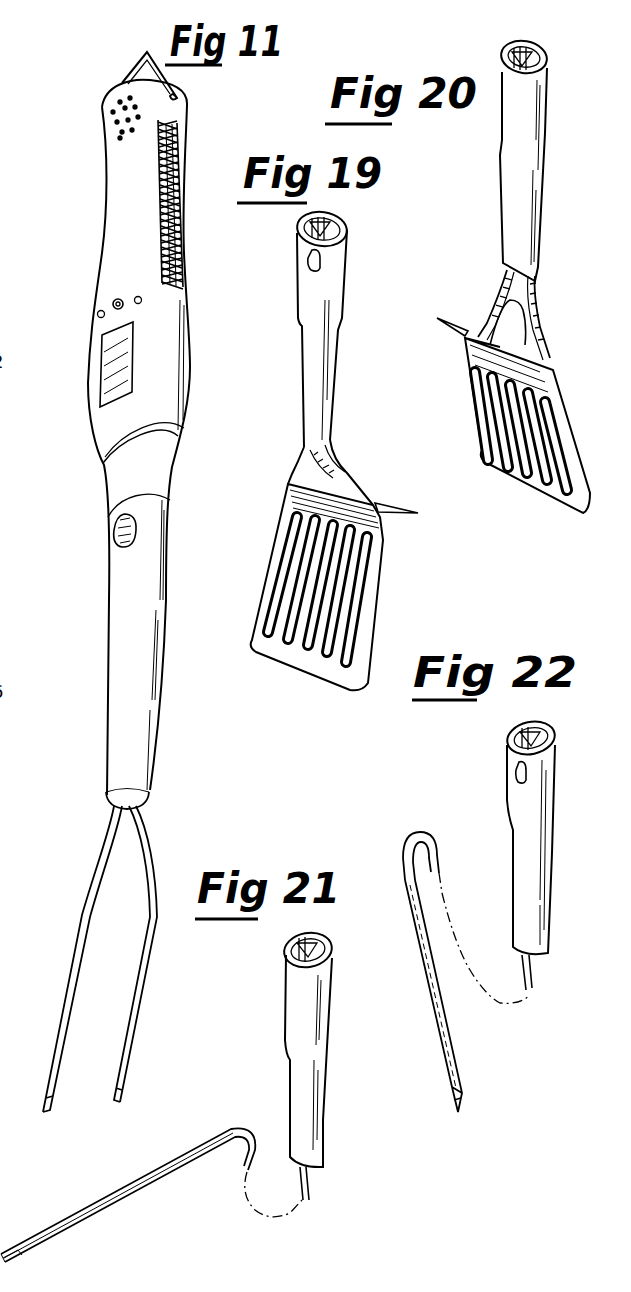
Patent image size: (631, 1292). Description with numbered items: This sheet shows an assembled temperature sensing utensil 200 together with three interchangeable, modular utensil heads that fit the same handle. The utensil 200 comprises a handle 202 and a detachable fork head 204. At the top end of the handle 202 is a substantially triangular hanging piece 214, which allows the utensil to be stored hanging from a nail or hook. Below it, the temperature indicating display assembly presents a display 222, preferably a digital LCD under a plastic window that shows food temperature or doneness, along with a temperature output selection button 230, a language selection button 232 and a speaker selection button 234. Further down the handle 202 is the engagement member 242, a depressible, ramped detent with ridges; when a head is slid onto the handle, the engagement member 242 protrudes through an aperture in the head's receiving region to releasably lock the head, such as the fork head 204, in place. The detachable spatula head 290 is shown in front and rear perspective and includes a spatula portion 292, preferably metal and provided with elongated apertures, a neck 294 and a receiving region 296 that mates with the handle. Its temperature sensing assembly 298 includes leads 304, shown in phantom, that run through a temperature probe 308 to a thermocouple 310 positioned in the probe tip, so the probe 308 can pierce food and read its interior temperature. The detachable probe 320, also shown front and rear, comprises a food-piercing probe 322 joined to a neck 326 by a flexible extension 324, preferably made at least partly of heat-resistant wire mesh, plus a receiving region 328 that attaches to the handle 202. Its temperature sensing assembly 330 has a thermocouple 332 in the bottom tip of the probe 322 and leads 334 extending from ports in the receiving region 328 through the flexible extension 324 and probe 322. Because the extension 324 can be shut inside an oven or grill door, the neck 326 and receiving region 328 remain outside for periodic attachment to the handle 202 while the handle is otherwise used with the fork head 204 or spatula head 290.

In FIG. 11, the temperature sensing utensil 200 is at (135, 579).
In FIG. 11, the handle 202 is at (105, 230).
In FIG. 11, the detachable fork head 204 is at (108, 630).
In FIG. 11, the hanging piece 214 is at (140, 68).
In FIG. 11, the display 222 is at (105, 382).
In FIG. 11, the temperature output selection button 230 is at (97, 315).
In FIG. 11, the language selection button 232 is at (143, 300).
In FIG. 11, the speaker selection button 234 is at (113, 303).
In FIG. 11, the engagement member 242 is at (115, 540).
In FIG. 19, the detachable spatula head 290 is at (356, 455).
In FIG. 20, the detachable spatula head 290 is at (506, 273).
In FIG. 19, the spatula portion 292 is at (316, 678).
In FIG. 20, the spatula portion 292 is at (525, 490).
In FIG. 19, the neck 294 is at (330, 372).
In FIG. 20, the neck 294 is at (540, 228).
In FIG. 19, the receiving region 296 is at (338, 220).
In FIG. 20, the receiving region 296 is at (532, 44).
In FIG. 19, the temperature sensing assembly 298 is at (398, 505).
In FIG. 20, the leads 304 is at (530, 350).
In FIG. 19, the temperature probe 308 is at (408, 520).
In FIG. 20, the temperature probe 308 is at (450, 322).
In FIG. 20, the thermocouple 310 is at (442, 330).
In FIG. 22, the detachable probe 320 is at (487, 917).
In FIG. 21, the detachable probe 320 is at (191, 1084).
In FIG. 22, the probe 322 is at (452, 1045).
In FIG. 21, the probe 322 is at (118, 1202).
In FIG. 22, the flexible extension 324 is at (535, 985).
In FIG. 21, the flexible extension 324 is at (310, 1192).
In FIG. 22, the neck 326 is at (548, 915).
In FIG. 21, the neck 326 is at (327, 1116).
In FIG. 22, the receiving region 328 is at (508, 751).
In FIG. 21, the receiving region 328 is at (314, 940).
In FIG. 22, the temperature sensing assembly 330 is at (447, 1083).
In FIG. 22, the thermocouple 332 is at (462, 1105).
In FIG. 22, the leads 334 is at (432, 991).
In FIG. 21, the leads 334 is at (273, 1194).